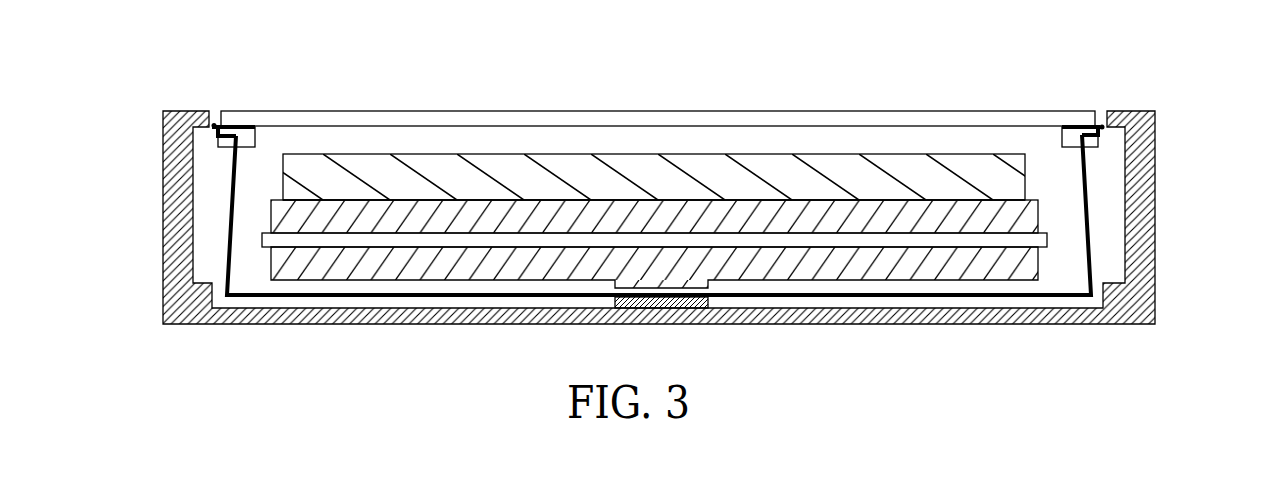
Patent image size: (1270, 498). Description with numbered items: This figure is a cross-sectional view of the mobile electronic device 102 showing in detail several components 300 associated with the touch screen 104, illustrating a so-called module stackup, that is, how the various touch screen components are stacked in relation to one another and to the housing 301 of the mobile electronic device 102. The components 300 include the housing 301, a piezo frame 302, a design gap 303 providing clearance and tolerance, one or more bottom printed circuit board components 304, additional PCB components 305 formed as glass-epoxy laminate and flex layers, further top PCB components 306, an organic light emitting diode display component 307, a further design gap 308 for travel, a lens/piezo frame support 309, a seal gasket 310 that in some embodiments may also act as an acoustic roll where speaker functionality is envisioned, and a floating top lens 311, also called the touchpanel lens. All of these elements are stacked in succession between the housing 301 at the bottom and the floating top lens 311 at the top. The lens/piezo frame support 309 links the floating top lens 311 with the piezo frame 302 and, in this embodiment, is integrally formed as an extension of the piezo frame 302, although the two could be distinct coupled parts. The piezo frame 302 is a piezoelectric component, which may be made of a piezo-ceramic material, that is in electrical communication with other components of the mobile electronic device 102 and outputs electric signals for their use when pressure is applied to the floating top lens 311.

The mobile electronic device 102 is at (715, 40).
The components 300 is at (659, 190).
The touch screen 104 is at (574, 195).
The housing 301 is at (1062, 324).
The piezo frame 302 is at (938, 297).
The design gap (clearance/tolerance) 303 is at (1055, 287).
The printed circuit board components (Btm) 304 is at (288, 277).
The PCB components (FR-4/Flex layers) 305 is at (263, 238).
The PCB components (top) 306 is at (272, 215).
The OLED display component 307 is at (302, 192).
The design gap (travel) 308 is at (297, 148).
The lens/piezo frame support 309 is at (1092, 137).
The seal gasket 310 is at (1120, 126).
The floating top lens 311 is at (1083, 118).